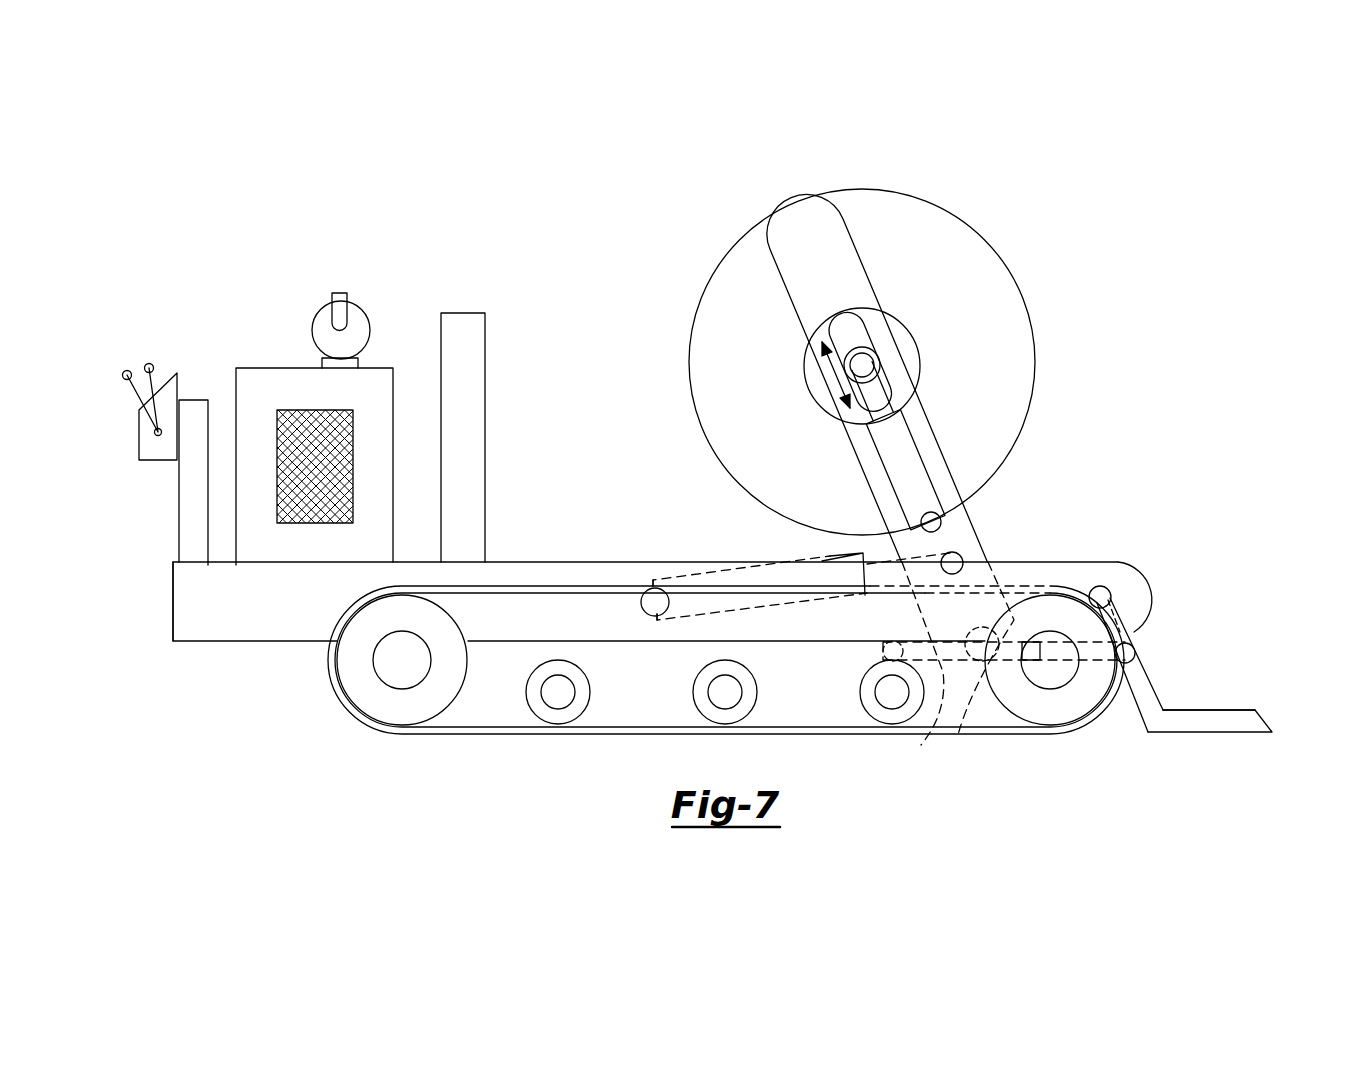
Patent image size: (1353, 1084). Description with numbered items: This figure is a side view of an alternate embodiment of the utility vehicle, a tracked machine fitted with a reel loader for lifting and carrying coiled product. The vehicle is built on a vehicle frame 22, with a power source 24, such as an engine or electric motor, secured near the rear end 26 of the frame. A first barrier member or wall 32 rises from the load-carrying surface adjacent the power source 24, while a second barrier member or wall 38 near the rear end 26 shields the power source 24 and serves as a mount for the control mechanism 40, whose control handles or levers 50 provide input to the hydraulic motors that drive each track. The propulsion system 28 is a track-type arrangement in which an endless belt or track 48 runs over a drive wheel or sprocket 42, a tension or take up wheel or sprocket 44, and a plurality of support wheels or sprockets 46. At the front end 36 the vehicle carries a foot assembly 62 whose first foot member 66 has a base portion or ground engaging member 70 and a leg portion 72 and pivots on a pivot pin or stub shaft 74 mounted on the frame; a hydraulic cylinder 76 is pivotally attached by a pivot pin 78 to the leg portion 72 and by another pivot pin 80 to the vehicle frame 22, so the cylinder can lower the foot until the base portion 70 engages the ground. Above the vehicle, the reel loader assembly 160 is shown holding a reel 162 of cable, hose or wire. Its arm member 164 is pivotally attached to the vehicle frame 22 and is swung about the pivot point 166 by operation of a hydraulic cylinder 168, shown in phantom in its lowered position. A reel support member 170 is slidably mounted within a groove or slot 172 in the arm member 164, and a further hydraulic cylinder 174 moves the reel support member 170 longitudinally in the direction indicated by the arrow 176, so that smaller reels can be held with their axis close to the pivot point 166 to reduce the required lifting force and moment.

The vehicle frame 22 is at (232, 647).
The power source 24 is at (264, 367).
The rear end 26 is at (172, 607).
The propulsion system 28 is at (384, 733).
The first barrier member or wall 32 is at (463, 332).
The front end 36 is at (1157, 593).
The second barrier member or wall 38 is at (193, 403).
The control mechanism 40 is at (150, 463).
The drive wheel or sprocket 42 is at (375, 698).
The tension or take up wheel or sprocket 44 is at (1060, 708).
The support wheels or sprockets 46 is at (583, 688).
The endless belt or track 48 is at (477, 737).
The control handles or levers 50 is at (148, 364).
The foot assembly 62 is at (1215, 660).
The first foot member 66 is at (1222, 710).
The base portion or ground engaging member 70 is at (1225, 734).
The leg portion 72 is at (1133, 697).
The pivot pin or stub shaft 74 is at (1107, 582).
The hydraulic cylinder 76 is at (923, 672).
The pivot pin 78 is at (1143, 655).
The pivot pin 80 is at (873, 648).
The reel loader assembly 160 is at (957, 200).
The reel 162 is at (1037, 382).
The arm member 164 is at (980, 537).
The pivot point 166 is at (970, 679).
The hydraulic cylinder 168 is at (712, 573).
The reel support member 170 is at (877, 352).
The groove or slot 172 is at (890, 397).
The hydraulic cylinder 174 is at (903, 468).
The arrow 176 is at (833, 376).